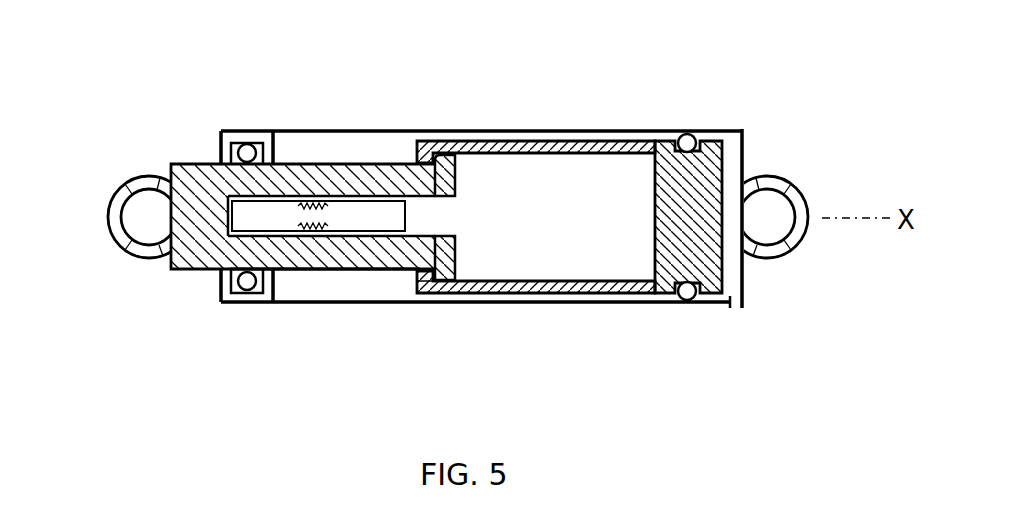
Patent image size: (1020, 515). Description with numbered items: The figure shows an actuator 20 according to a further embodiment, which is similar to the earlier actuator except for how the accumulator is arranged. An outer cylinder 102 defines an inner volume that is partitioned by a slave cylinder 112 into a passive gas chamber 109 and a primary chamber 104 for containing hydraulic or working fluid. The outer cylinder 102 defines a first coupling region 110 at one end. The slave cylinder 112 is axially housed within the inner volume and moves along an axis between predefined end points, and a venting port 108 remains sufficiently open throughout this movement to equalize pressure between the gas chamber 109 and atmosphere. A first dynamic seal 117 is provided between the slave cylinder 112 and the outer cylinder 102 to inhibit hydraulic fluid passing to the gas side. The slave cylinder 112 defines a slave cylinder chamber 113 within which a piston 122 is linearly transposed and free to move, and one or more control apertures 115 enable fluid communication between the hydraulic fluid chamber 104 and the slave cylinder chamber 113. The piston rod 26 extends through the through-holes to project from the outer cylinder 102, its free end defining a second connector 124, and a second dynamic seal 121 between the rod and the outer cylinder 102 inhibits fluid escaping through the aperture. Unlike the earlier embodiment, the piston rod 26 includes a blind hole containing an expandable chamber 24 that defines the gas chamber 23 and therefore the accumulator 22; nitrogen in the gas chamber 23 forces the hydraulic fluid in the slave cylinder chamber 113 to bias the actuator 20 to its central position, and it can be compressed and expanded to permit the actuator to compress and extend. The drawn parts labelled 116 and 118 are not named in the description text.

The actuator 20 is at (776, 91).
The accumulator 22 is at (214, 281).
The gas chamber 23 is at (273, 213).
The expandable chamber 24 is at (383, 197).
The piston rod 26 is at (277, 262).
The outer cylinder 102 is at (485, 129).
The primary chamber 104 is at (378, 137).
The venting port 108 is at (733, 308).
The passive gas chamber 109 is at (740, 270).
The first coupling region 110 is at (782, 178).
The slave cylinder 112 is at (503, 294).
The slave cylinder chamber 113 is at (633, 227).
The control aperture 115 is at (548, 140).
The piston 116 is at (637, 142).
The first dynamic seal 117 is at (690, 135).
The retaining lip 118 is at (413, 282).
The second dynamic seal 121 is at (232, 155).
The piston 122 is at (458, 183).
The second connector 124 is at (108, 205).